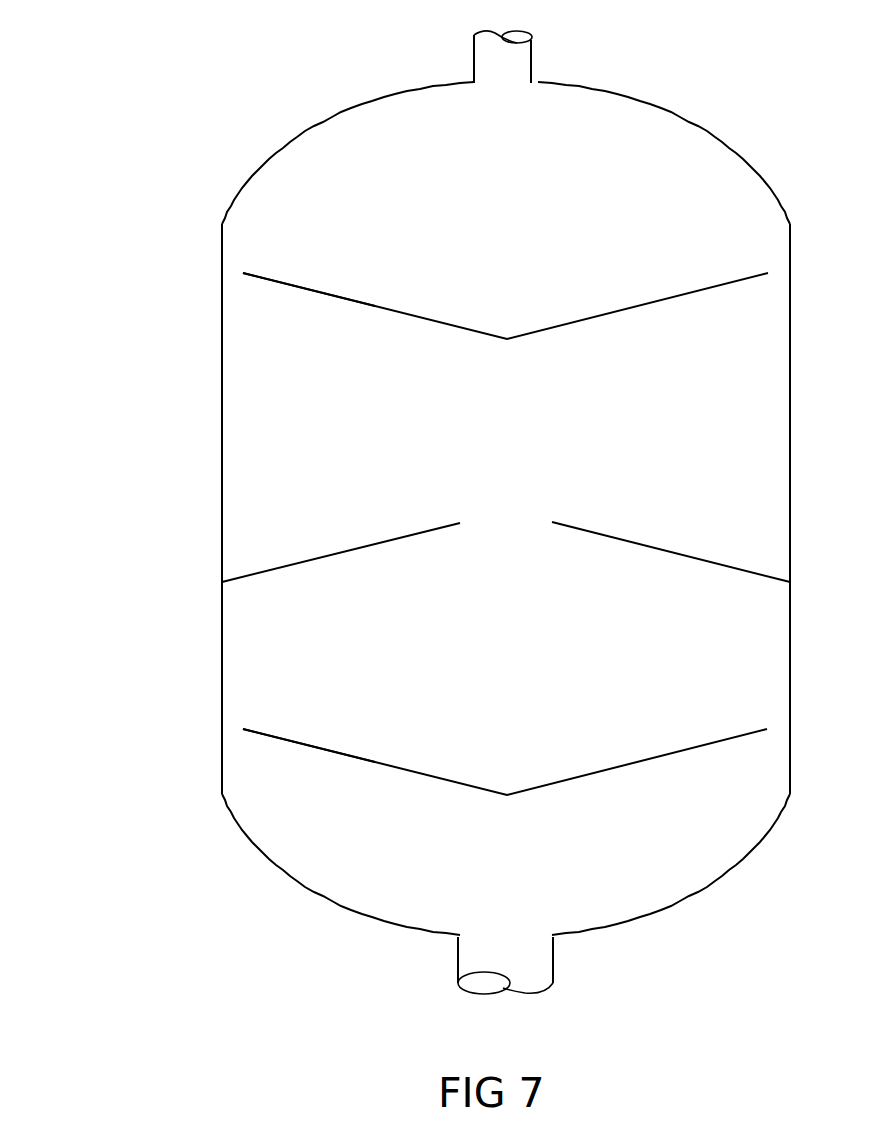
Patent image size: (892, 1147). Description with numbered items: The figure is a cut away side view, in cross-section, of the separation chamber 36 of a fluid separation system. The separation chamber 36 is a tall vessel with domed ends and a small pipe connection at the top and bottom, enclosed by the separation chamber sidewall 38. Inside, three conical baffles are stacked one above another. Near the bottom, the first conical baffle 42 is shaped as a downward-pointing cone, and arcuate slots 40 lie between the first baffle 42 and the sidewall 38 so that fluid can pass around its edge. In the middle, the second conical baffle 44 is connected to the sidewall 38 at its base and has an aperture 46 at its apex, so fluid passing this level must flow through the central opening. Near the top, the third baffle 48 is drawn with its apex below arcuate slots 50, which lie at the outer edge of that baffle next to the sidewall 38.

The separation chamber 36 is at (408, 512).
The separation chamber sidewall 38 is at (222, 640).
The arcuate slots 40 is at (237, 730).
The first conical baffle 42 is at (407, 734).
The second conical baffle 44 is at (317, 557).
The aperture 46 is at (507, 521).
The third baffle 48 is at (408, 279).
The arcuate slots 50 is at (237, 273).